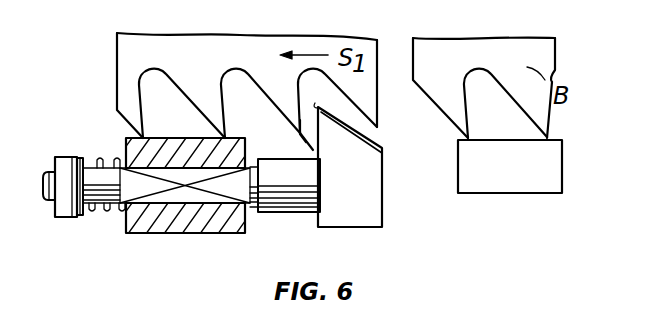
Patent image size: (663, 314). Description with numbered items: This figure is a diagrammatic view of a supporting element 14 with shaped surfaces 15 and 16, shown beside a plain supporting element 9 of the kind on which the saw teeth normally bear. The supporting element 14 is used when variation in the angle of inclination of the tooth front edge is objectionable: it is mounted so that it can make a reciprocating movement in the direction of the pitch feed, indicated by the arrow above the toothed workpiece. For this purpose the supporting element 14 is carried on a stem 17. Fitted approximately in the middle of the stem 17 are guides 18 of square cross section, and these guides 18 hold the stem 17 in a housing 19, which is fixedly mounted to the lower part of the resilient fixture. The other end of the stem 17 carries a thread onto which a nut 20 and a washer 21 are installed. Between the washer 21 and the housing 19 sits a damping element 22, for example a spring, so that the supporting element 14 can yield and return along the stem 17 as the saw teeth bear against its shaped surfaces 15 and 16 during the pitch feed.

The supporting element 9 is at (510, 180).
The supporting element 14 is at (322, 225).
The shaped surface 15 is at (383, 150).
The shaped surface 16 is at (303, 127).
The stem 17 is at (288, 200).
The guides 18 is at (178, 190).
The housing 19 is at (202, 226).
The nut 20 is at (66, 212).
The washer 21 is at (80, 215).
The damping element 22 is at (100, 157).